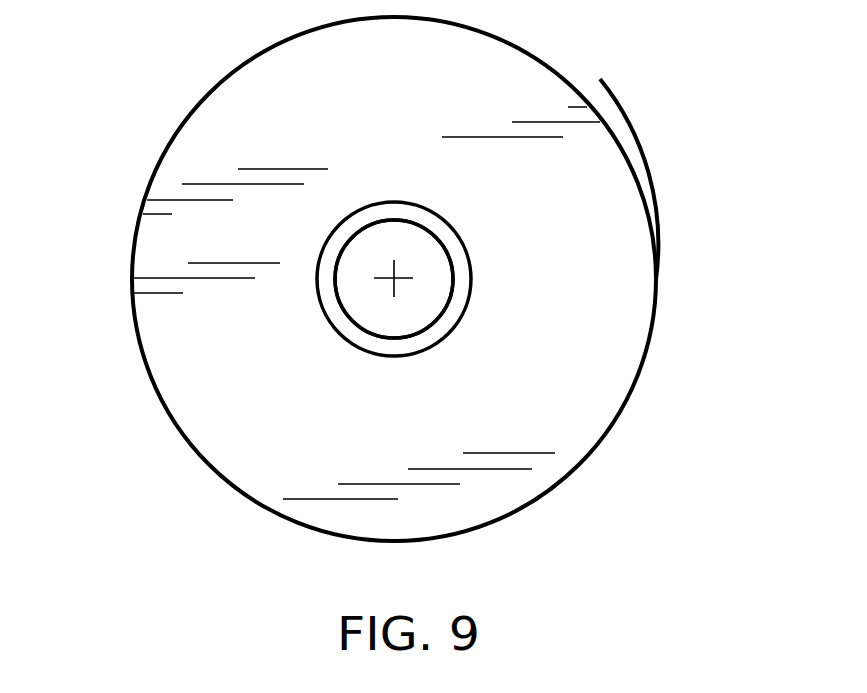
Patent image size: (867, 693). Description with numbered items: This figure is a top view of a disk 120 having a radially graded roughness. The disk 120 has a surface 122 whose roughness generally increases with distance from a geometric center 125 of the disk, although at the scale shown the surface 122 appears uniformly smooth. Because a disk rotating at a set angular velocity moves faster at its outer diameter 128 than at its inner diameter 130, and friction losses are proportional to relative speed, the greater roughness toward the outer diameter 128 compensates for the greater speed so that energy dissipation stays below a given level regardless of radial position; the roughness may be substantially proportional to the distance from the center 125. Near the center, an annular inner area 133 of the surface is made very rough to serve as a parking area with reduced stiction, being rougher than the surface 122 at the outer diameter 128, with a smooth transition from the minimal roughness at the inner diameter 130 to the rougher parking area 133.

The disk 120 is at (150, 49).
The surface 122 is at (538, 78).
The geometric center 125 is at (373, 275).
The outer diameter 128 is at (655, 202).
The inner diameter 130 is at (478, 254).
The annular inner area 133 is at (448, 317).